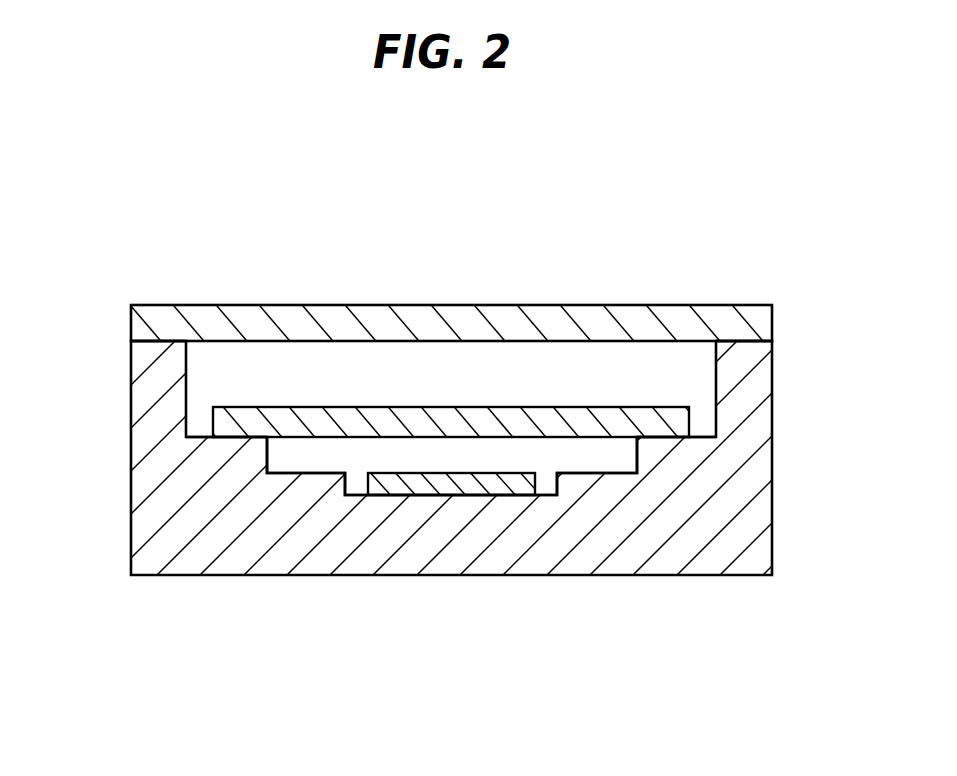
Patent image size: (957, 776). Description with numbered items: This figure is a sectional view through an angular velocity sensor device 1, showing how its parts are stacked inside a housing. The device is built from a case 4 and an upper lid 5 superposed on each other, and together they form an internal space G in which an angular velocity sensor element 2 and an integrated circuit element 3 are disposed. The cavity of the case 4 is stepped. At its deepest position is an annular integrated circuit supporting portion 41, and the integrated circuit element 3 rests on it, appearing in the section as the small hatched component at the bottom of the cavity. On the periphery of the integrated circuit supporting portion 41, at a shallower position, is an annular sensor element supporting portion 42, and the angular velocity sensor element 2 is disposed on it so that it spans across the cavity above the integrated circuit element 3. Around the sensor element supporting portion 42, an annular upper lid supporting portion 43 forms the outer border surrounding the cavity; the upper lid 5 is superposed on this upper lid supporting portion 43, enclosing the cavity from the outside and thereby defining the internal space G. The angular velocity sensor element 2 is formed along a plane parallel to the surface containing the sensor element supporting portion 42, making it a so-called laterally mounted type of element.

The angular velocity sensor device 1 is at (478, 440).
The angular velocity sensor element 2 is at (680, 421).
The integrated circuit element 3 is at (513, 487).
The case 4 is at (745, 528).
The integrated circuit supporting portion 41 is at (455, 500).
The sensor element supporting portion 42 is at (229, 444).
The upper lid supporting portion 43 is at (158, 344).
The upper lid 5 is at (748, 320).
The internal space G is at (461, 377).